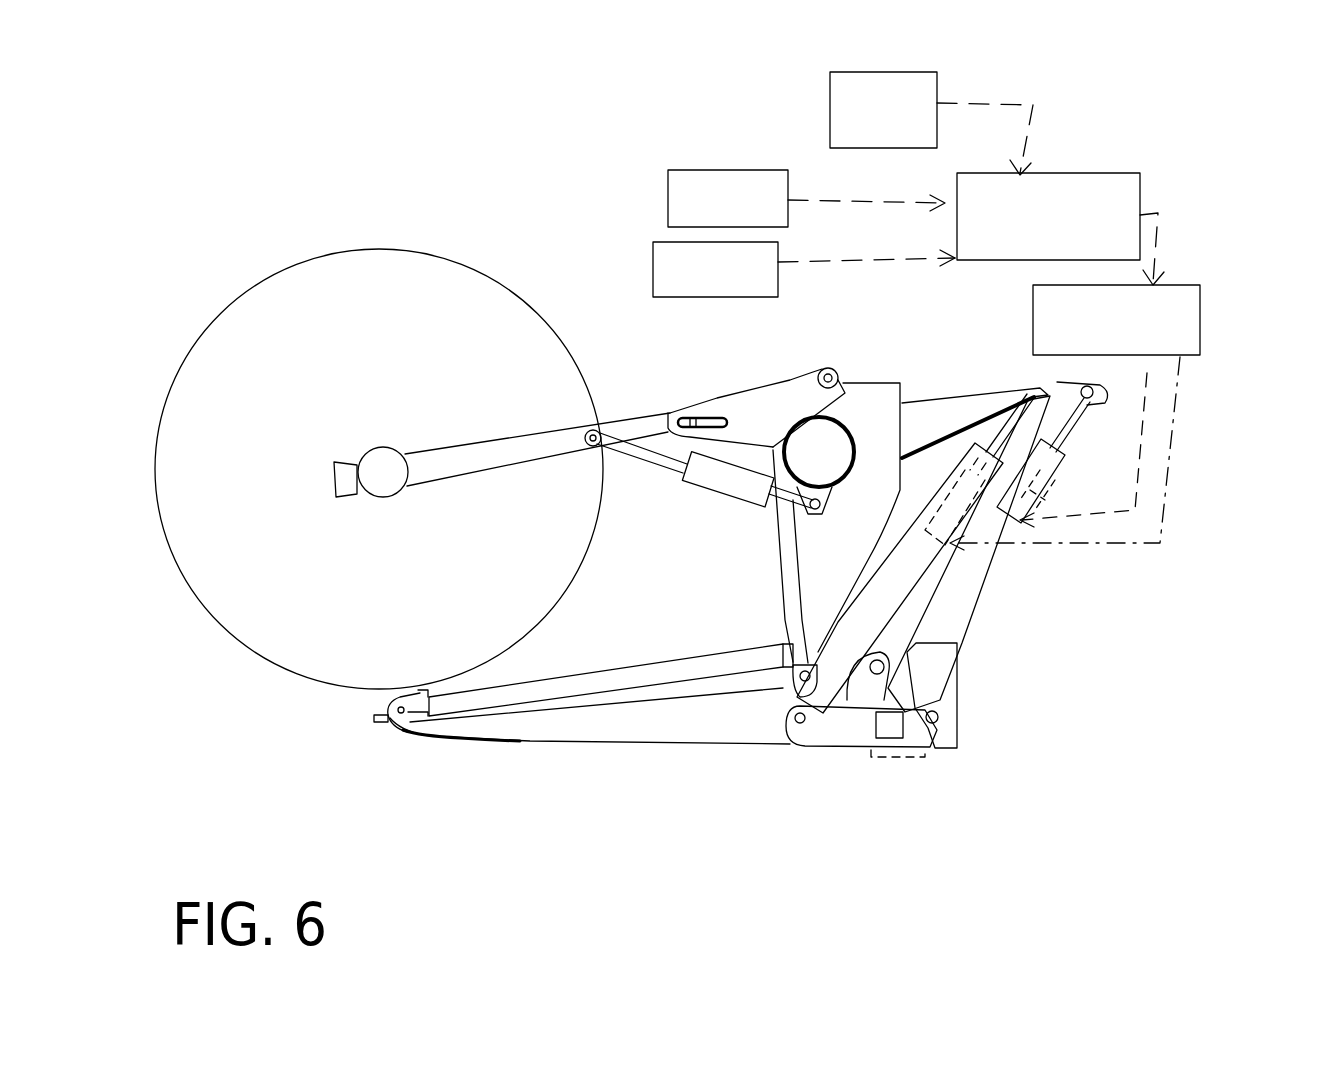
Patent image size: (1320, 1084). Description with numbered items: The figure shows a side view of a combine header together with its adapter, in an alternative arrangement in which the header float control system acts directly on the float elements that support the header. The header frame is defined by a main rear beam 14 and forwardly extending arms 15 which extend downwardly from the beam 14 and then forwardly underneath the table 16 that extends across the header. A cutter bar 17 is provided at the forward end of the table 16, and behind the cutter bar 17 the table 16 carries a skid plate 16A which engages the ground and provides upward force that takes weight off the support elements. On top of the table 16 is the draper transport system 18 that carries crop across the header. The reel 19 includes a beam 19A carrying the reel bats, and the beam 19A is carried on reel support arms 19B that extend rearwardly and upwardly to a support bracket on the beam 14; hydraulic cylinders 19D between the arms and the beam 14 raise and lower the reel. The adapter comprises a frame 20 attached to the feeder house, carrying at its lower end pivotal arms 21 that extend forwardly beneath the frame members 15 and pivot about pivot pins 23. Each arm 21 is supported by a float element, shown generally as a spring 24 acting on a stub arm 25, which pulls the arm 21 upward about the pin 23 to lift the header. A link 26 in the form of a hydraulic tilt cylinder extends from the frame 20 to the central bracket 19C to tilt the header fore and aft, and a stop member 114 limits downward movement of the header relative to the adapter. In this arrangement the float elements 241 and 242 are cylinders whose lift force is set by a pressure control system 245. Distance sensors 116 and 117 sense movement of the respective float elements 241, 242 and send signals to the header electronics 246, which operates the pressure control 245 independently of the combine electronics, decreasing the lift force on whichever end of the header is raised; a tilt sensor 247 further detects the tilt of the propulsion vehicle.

The main rear beam 14 is at (840, 478).
The forwardly extending arm 15 is at (807, 578).
The table 16 is at (522, 712).
The skid plate 16A is at (458, 737).
The cutter bar 17 is at (384, 722).
The draper transport system 18 is at (607, 678).
The reel 19 is at (583, 540).
The reel beam 19A is at (384, 497).
The reel support arm 19B is at (472, 448).
The central bracket 19C is at (752, 405).
The hydraulic cylinder 19D is at (705, 480).
The adapter frame 20 is at (978, 585).
The pivotal arm 21 is at (912, 735).
The pivot pin 23 is at (936, 715).
The spring 24 is at (863, 618).
The stub arm 25 is at (853, 731).
The link 26 is at (905, 358).
The stop member 114 is at (890, 763).
The distance sensor 116 is at (712, 178).
The distance sensor 117 is at (735, 288).
The float element 241 is at (968, 487).
The float element 242 is at (1043, 484).
The pressure control system 245 is at (1192, 325).
The header electronics 246 is at (1110, 182).
The tilt sensor 247 is at (832, 76).